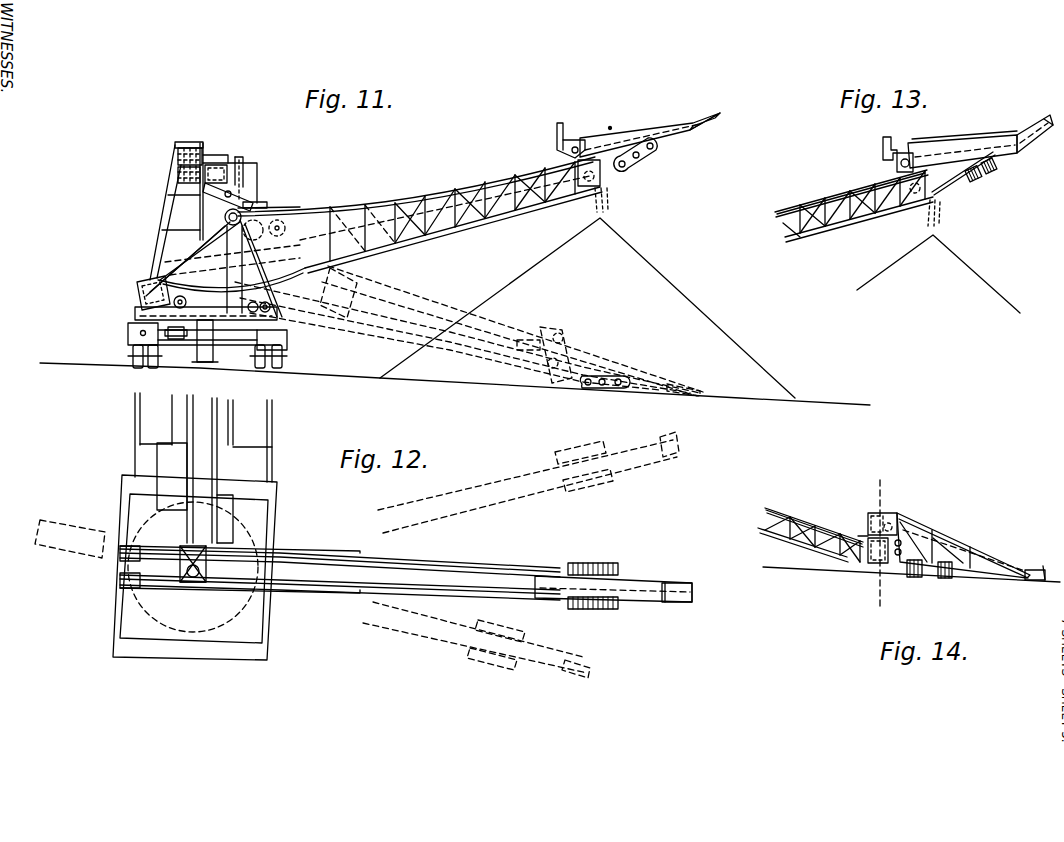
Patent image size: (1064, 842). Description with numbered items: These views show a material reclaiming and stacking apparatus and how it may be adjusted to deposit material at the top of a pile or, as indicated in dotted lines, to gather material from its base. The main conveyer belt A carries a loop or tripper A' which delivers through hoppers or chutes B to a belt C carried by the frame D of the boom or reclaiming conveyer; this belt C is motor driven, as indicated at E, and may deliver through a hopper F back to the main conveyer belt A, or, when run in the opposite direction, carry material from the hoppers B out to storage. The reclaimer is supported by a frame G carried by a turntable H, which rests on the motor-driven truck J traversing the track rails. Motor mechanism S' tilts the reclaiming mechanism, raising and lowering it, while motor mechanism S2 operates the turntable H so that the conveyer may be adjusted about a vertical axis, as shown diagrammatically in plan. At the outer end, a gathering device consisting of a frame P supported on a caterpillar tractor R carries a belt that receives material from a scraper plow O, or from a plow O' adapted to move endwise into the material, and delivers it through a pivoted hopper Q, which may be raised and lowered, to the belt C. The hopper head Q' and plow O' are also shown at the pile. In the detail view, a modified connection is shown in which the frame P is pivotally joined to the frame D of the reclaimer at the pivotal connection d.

In FIG. 11, the main conveyer belt A is at (182, 367).
In FIG. 12, the loop or tripper A' is at (221, 468).
In FIG. 11, the hoppers or chutes B is at (242, 200).
In FIG. 12, the hoppers or chutes B is at (180, 570).
In FIG. 11, the reclaimer belt C is at (460, 224).
In FIG. 12, the reclaimer belt C is at (466, 575).
In FIG. 13, the reclaimer belt C is at (840, 225).
In FIG. 14, the reclaimer belt C is at (788, 543).
In FIG. 11, the frame of the boom or reclaiming conveyer D is at (356, 185).
In FIG. 13, the frame of the boom or reclaiming conveyer D is at (810, 200).
In FIG. 14, the frame of the boom or reclaiming conveyer D is at (808, 516).
In FIG. 11, the motor drive for the reclaimer belt E is at (284, 222).
In FIG. 11, the hopper F is at (262, 340).
In FIG. 11, the supporting frame G is at (150, 305).
In FIG. 11, the turntable H is at (140, 323).
In FIG. 11, the truck J is at (135, 335).
In FIG. 12, the truck J is at (262, 492).
In FIG. 11, the motor mechanism for tilting the reclaiming mechanism S' is at (284, 320).
In FIG. 11, the motor mechanism for operating the turntable S2 is at (150, 285).
In FIG. 13, the hopper Q is at (867, 156).
In FIG. 14, the hopper Q is at (859, 525).
In FIG. 11, the hopper head Q' is at (638, 121).
In FIG. 12, the frame P is at (640, 590).
In FIG. 13, the frame P is at (978, 145).
In FIG. 14, the frame P is at (980, 556).
In FIG. 12, the scraper plow O is at (630, 555).
In FIG. 13, the scraper plow O is at (1030, 125).
In FIG. 11, the plow O' is at (693, 254).
In FIG. 14, the plow O' is at (1037, 562).
In FIG. 11, the tractor R is at (648, 170).
In FIG. 12, the tractor R is at (598, 565).
In FIG. 13, the tractor R is at (978, 178).
In FIG. 14, the tractor R is at (943, 577).
In FIG. 14, the pivotal connection d is at (890, 518).